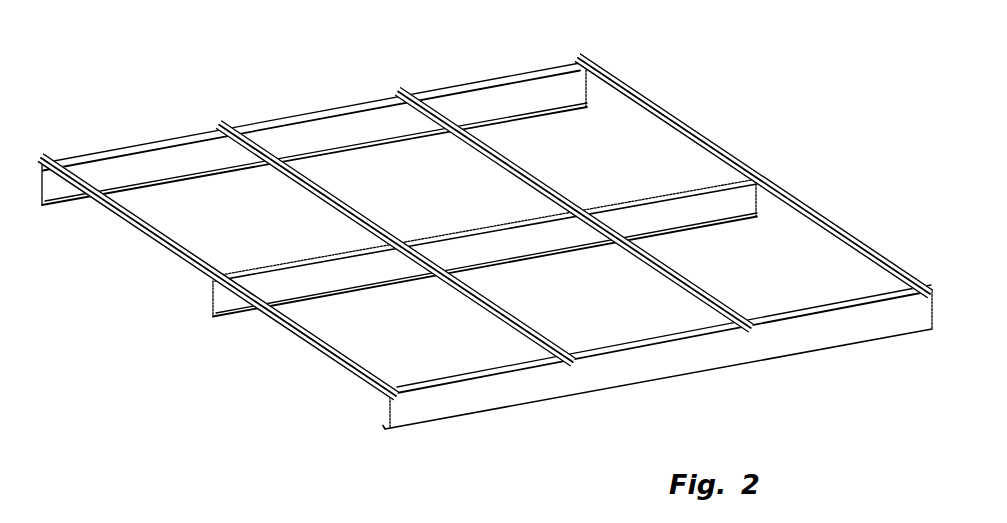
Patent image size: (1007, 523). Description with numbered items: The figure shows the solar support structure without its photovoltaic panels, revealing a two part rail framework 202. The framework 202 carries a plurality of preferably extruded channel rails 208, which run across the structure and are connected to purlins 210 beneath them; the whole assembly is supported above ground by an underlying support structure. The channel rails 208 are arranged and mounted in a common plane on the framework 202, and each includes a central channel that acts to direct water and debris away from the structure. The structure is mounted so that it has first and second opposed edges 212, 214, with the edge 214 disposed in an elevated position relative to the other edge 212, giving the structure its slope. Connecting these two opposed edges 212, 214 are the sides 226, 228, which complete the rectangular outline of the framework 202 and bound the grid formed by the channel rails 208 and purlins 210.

The rail framework 202 is at (485, 244).
The channel rails 208 is at (798, 192).
The purlins 210 is at (528, 100).
The first edge 212 is at (792, 374).
The second edge 214 is at (314, 104).
The side 226 is at (696, 110).
The side 228 is at (262, 328).